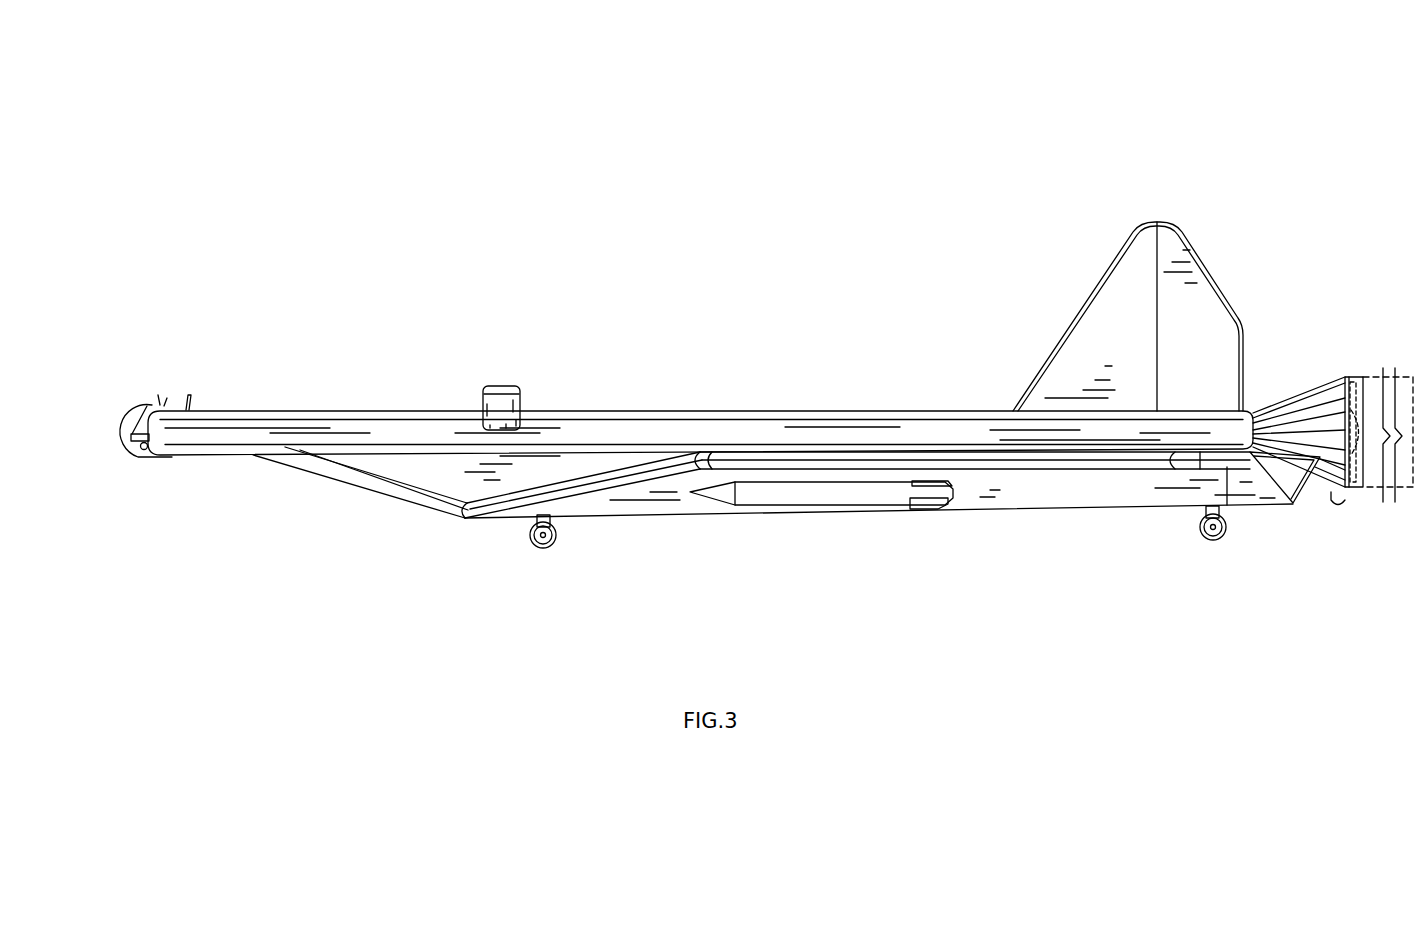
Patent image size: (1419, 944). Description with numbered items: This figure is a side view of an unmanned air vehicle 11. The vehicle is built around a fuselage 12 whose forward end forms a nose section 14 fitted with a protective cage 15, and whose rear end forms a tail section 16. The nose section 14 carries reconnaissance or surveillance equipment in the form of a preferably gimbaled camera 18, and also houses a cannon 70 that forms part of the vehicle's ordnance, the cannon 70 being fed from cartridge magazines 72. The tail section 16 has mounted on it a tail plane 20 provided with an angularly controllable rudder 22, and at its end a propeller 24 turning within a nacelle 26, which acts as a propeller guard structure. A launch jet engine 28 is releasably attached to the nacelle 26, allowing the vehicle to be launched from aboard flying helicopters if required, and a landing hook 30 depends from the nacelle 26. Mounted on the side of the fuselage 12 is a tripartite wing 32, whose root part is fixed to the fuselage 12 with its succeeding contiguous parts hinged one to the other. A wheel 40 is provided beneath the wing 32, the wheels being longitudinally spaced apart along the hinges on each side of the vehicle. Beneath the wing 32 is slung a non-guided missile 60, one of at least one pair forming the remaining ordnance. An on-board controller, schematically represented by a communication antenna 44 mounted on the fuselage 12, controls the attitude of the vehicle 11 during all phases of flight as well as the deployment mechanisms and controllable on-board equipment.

The unmanned air vehicle 11 is at (338, 143).
The fuselage 12 is at (343, 410).
The nose section 14 is at (163, 404).
The protective cage 15 is at (147, 405).
The tail section 16 is at (1266, 385).
The gimbaled camera 18 is at (143, 452).
The tail plane 20 is at (1128, 330).
The rudder 22 is at (1208, 362).
The propeller 24 is at (1356, 425).
The nacelle 26 is at (1333, 383).
The launch jet engine 28 is at (1405, 500).
The landing hook 30 is at (1342, 504).
The tripartite wing 32 is at (378, 508).
The wheel 40 is at (558, 531).
The communication antenna 44 is at (190, 404).
The missile 60 is at (864, 497).
The cannon 70 is at (131, 433).
The cartridge magazine 72 is at (505, 385).